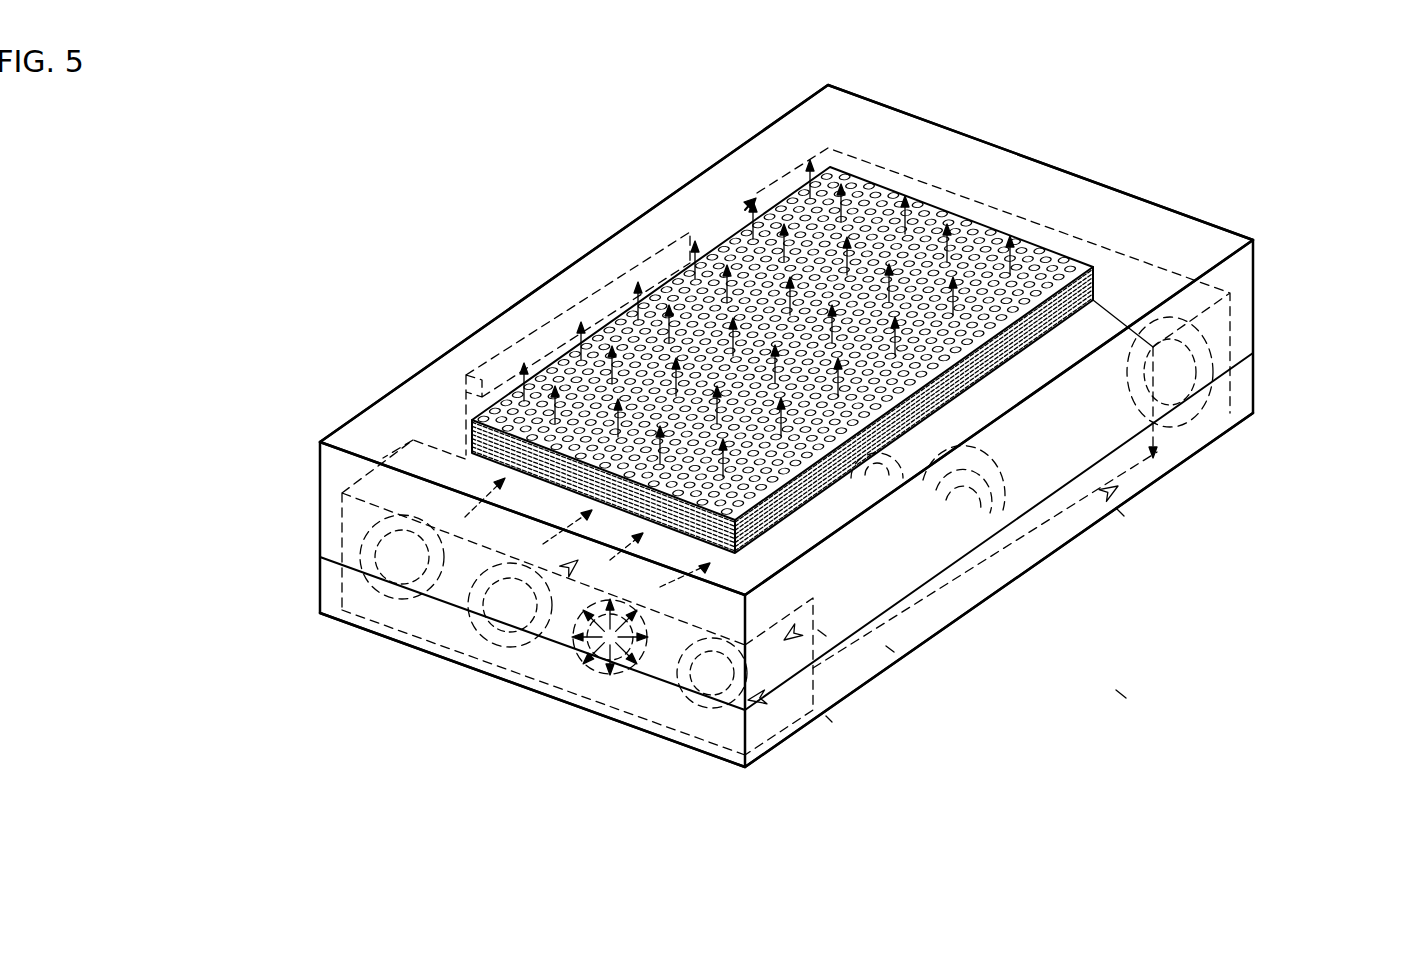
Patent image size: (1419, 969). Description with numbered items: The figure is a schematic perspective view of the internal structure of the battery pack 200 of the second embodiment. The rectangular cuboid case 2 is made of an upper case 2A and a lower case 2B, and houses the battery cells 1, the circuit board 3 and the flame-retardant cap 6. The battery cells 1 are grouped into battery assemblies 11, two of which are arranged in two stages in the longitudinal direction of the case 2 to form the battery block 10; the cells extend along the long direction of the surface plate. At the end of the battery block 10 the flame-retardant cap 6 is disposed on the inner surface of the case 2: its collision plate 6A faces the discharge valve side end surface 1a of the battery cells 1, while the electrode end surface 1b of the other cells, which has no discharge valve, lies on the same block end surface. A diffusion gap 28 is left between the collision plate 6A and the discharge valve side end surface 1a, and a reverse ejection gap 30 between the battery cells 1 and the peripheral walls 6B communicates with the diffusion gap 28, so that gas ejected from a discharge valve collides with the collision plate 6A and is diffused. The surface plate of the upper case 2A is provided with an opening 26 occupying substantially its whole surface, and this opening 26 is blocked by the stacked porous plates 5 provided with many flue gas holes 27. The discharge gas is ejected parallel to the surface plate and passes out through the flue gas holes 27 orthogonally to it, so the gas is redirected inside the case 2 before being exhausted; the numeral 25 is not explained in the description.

The battery pack 200 is at (383, 180).
The case 2 is at (867, 426).
The upper case 2A is at (1157, 153).
The lower case 2B is at (843, 494).
The porous plate 5 is at (913, 203).
The circuit board 3 is at (557, 312).
The flame-retardant cap 6 is at (1080, 243).
The collision plate 6A is at (530, 660).
The peripheral wall 6B is at (428, 640).
The battery cell 1 is at (779, 617).
The discharge valve side end surface 1a is at (712, 690).
The electrode end surface 1b is at (402, 567).
The heat flow path 25 is at (478, 645).
The opening 26 is at (737, 234).
The flue gas hole 27 is at (783, 205).
The diffusion gap 28 is at (830, 720).
The reverse ejection gap 30 is at (822, 632).
The battery assembly 11 is at (1120, 512).
The battery block 10 is at (1193, 630).